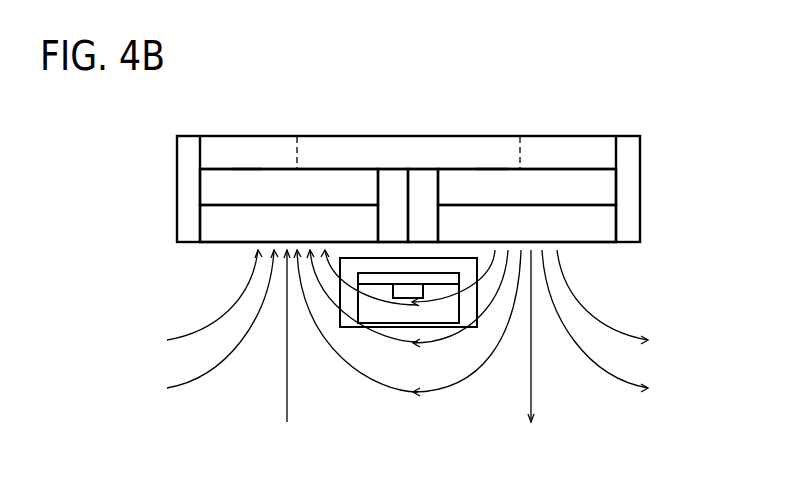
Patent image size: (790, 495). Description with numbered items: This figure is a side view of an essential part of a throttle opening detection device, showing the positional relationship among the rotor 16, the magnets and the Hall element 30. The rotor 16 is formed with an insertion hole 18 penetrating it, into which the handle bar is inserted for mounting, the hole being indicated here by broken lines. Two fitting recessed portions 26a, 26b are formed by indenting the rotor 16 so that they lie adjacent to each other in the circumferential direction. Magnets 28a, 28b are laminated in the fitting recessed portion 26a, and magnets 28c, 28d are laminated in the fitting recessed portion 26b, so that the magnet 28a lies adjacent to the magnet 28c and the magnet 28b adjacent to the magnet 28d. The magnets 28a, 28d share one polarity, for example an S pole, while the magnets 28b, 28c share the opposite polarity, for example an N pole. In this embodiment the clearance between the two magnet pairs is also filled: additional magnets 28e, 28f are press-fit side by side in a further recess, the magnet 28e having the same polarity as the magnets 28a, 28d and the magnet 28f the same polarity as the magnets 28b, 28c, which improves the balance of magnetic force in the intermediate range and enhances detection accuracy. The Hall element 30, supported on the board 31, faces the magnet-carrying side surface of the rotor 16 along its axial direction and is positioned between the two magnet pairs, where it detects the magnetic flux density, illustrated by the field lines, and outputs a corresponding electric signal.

The rotor 16 is at (578, 148).
The insertion hole 18 is at (300, 153).
The fitting recessed portion 26a is at (236, 170).
The fitting recessed portion 26b is at (503, 170).
The magnet 28a is at (218, 222).
The magnet 28b is at (218, 185).
The magnet 28c is at (598, 222).
The magnet 28d is at (598, 185).
The magnet 28e is at (391, 180).
The magnet 28f is at (424, 180).
The Hall element 30 is at (407, 288).
The board 31 is at (441, 278).